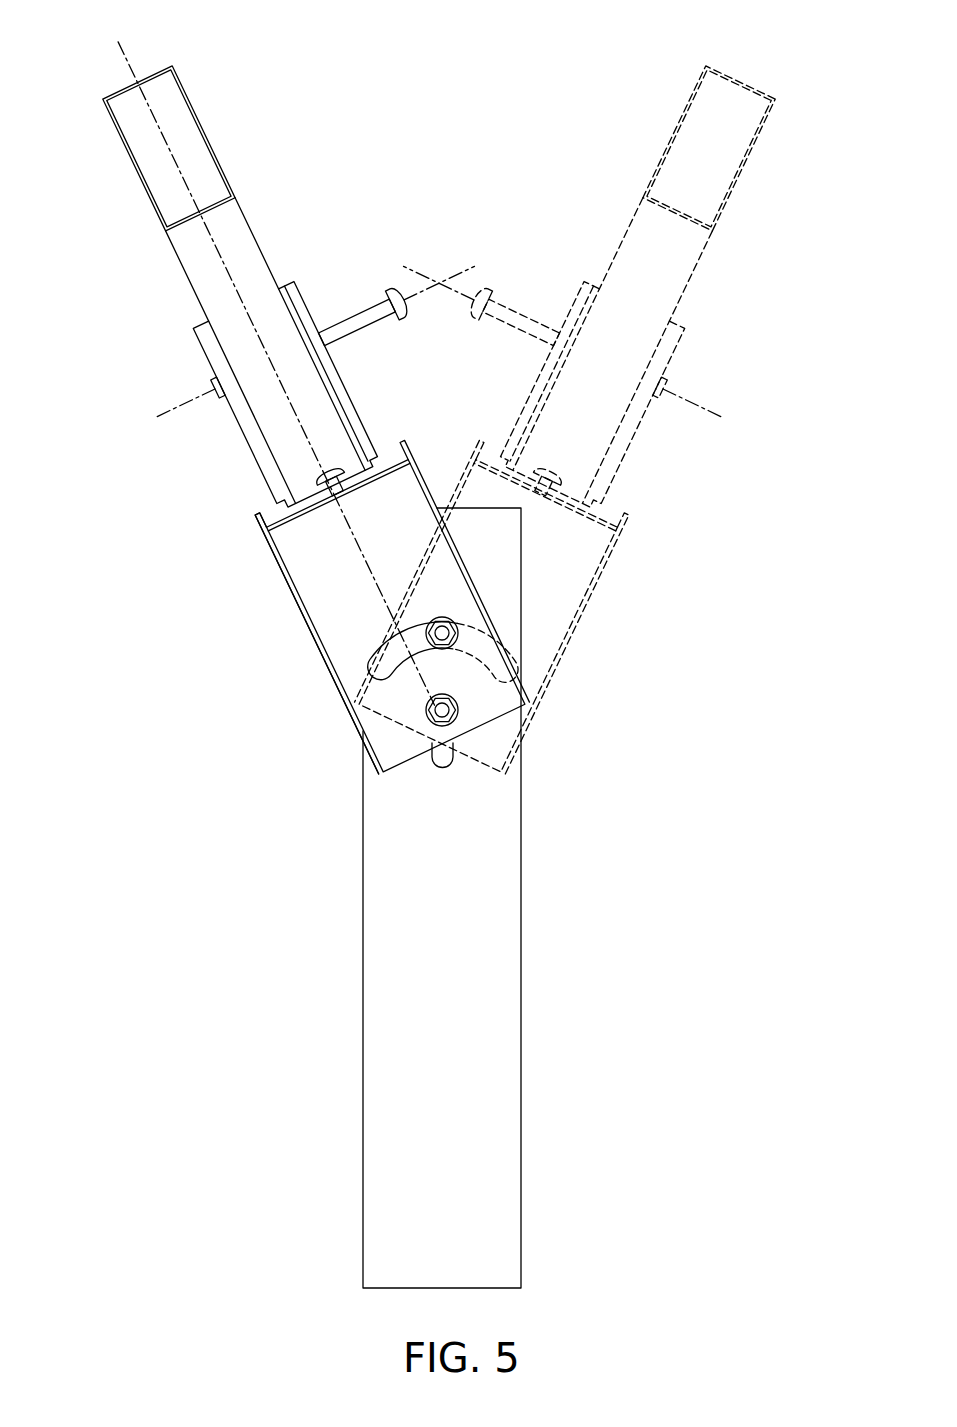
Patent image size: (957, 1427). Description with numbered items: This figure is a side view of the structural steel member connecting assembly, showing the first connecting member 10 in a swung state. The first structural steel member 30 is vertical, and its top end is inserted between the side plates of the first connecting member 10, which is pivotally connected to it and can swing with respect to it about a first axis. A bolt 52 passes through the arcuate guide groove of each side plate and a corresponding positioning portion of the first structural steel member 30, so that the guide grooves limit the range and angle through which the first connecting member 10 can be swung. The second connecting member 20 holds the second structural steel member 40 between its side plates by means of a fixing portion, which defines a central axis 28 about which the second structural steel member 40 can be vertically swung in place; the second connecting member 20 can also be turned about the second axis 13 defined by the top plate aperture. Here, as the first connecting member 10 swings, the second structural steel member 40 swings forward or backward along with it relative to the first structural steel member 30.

The first connecting member 10 is at (347, 607).
The second axis 13 is at (125, 57).
The second connecting member 20 is at (174, 362).
The central axis 28 is at (457, 270).
The first structural steel member 30 is at (521, 1180).
The second structural steel member 40 is at (123, 143).
The bolt 52 is at (332, 470).